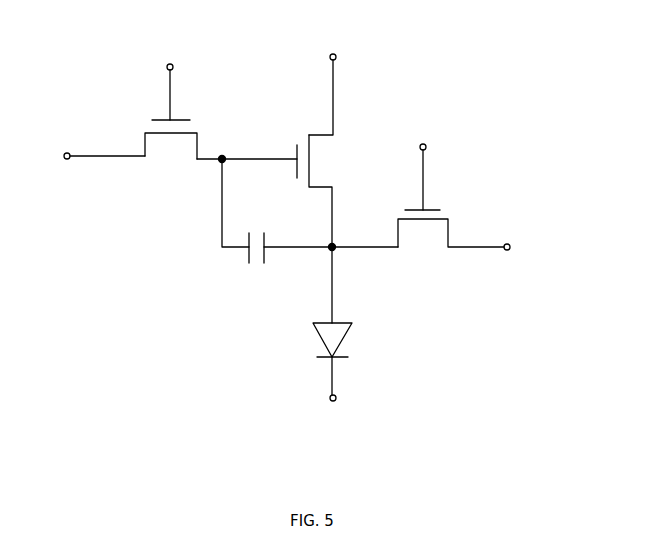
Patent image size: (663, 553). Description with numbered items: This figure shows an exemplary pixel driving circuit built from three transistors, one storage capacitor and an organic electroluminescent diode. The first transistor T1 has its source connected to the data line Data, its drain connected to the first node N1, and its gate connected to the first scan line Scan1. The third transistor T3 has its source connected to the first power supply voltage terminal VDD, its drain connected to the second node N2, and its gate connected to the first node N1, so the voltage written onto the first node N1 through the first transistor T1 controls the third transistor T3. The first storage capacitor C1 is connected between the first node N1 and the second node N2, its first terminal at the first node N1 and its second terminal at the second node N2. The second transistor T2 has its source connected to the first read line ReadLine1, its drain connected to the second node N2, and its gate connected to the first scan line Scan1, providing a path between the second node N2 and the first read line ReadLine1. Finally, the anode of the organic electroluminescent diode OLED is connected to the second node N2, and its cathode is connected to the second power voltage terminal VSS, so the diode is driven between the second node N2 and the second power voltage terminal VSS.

The first transistor T1 is at (171, 147).
The second transistor T2 is at (451, 237).
The third transistor T3 is at (324, 191).
The first storage capacitor C1 is at (287, 261).
The first node N1 is at (247, 191).
The second node N2 is at (364, 273).
The organic electroluminescent diode OLED is at (360, 359).
The data line Data is at (98, 139).
The first scan line Scan1 is at (301, 127).
The first power supply voltage terminal VDD is at (327, 82).
The second power voltage terminal VSS is at (339, 409).
The first read line ReadLine1 is at (514, 236).